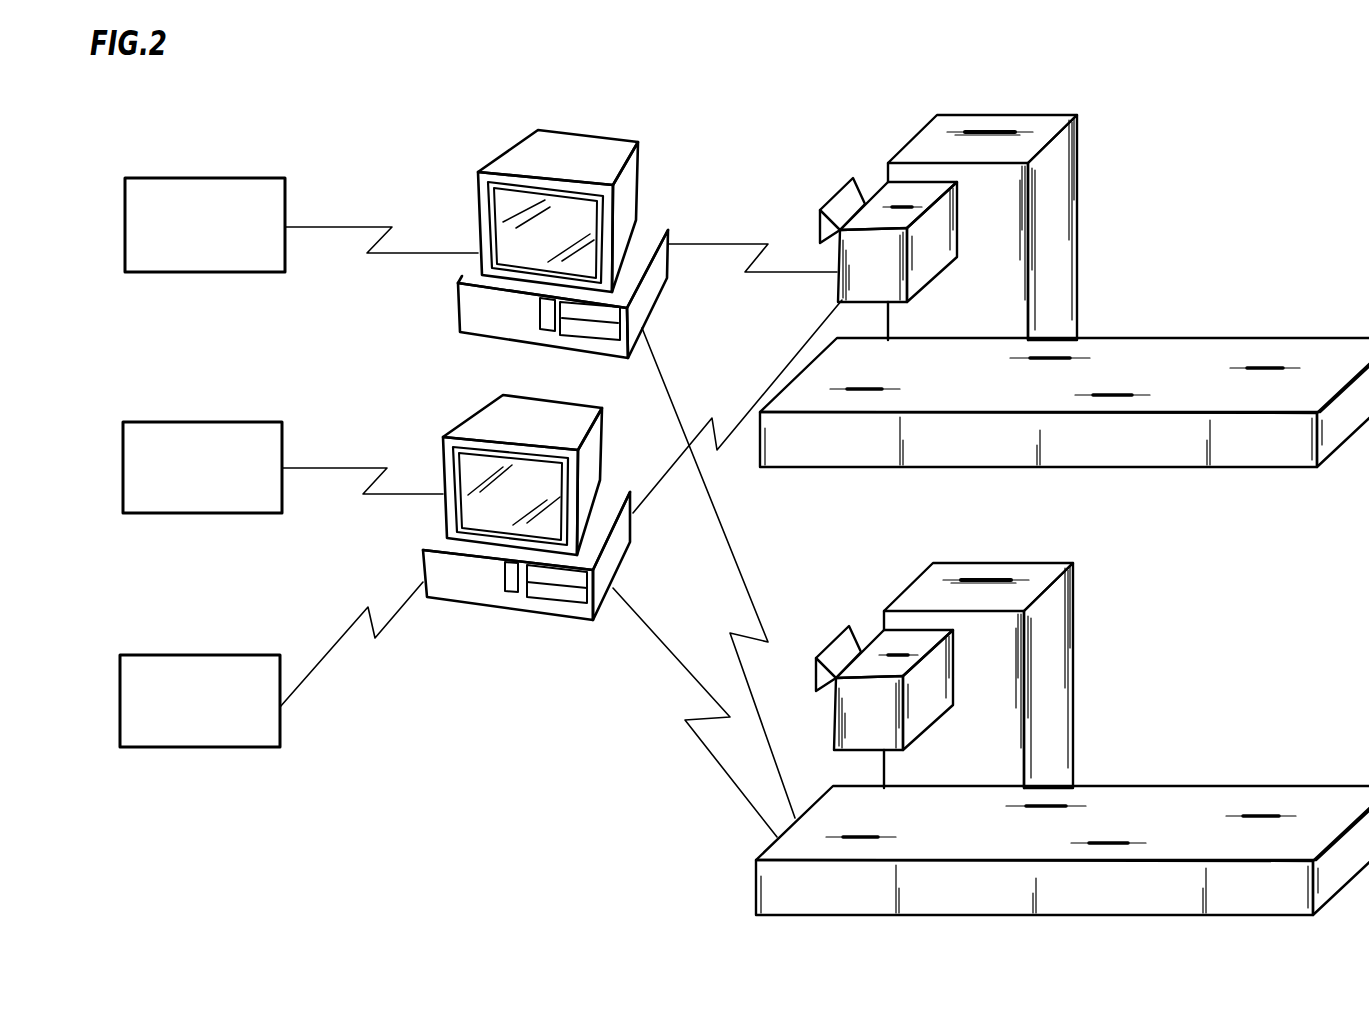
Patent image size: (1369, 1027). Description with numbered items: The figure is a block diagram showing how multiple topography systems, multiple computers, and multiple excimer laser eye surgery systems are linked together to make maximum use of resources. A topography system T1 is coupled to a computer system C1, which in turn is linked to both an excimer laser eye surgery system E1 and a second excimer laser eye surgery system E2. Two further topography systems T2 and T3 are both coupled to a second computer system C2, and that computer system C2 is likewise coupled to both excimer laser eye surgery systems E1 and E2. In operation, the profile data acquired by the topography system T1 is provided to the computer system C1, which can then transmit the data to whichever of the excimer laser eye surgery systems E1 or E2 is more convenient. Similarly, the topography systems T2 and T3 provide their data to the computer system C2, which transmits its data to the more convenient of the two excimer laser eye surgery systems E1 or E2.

The topography system T1 is at (217, 241).
The topography system T2 is at (213, 483).
The topography system T3 is at (210, 717).
The computer system C1 is at (635, 172).
The computer system C2 is at (472, 408).
The excimer laser eye surgery system E1 is at (1078, 237).
The excimer laser eye surgery system E2 is at (1074, 685).